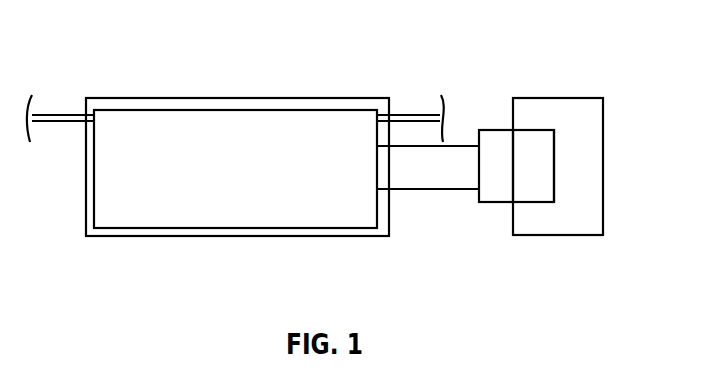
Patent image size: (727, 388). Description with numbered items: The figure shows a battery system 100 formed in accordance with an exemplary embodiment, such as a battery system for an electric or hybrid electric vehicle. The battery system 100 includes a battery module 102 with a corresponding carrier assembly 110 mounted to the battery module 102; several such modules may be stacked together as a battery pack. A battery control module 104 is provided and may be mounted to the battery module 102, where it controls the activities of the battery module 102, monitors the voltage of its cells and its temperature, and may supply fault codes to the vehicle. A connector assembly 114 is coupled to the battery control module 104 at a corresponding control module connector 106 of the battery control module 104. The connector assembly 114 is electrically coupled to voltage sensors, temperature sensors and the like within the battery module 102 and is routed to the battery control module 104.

The battery system 100 is at (341, 54).
The battery module 102 is at (267, 208).
The battery control module 104 is at (583, 235).
The control module connector 106 is at (540, 202).
The carrier assembly 110 is at (164, 96).
The connector assembly 114 is at (499, 202).